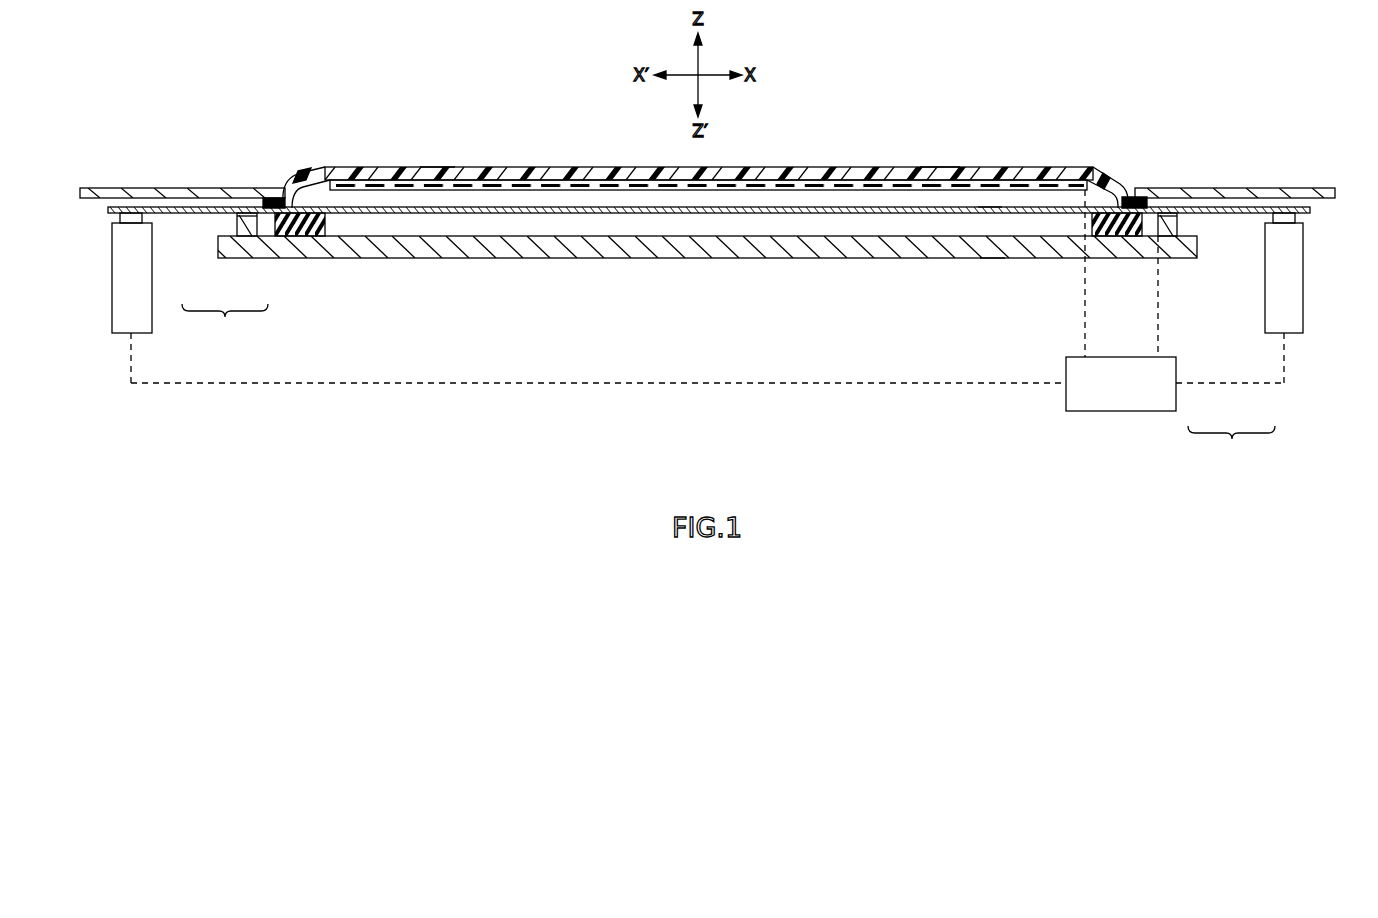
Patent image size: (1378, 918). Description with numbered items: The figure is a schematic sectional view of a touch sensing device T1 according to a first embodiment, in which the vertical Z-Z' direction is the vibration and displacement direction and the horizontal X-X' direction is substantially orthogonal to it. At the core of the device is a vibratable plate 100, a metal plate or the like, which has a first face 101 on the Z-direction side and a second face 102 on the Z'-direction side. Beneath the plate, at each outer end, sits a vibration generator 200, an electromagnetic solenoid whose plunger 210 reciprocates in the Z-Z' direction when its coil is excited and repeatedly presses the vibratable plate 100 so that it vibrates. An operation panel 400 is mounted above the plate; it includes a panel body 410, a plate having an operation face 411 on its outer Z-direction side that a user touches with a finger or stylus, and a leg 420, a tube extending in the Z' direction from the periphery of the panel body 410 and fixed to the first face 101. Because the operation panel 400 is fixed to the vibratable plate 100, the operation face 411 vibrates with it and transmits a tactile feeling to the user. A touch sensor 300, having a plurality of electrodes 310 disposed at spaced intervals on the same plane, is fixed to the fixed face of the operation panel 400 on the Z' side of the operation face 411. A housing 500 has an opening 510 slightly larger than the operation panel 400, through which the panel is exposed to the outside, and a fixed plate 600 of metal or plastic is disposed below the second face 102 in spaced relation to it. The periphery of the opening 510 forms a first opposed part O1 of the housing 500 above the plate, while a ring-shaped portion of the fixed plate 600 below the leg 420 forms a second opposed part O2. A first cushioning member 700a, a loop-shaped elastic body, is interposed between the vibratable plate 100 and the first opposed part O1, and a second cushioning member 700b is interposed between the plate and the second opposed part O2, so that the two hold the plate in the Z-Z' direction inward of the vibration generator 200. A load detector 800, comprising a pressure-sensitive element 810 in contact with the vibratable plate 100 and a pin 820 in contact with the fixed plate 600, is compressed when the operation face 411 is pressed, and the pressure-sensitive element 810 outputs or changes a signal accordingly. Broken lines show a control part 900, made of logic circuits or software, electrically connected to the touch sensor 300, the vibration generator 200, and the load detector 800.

The touch sensing device T1 is at (98, 75).
The vibratable plate 100 is at (1312, 210).
The first face 101 is at (990, 214).
The second face 102 is at (993, 259).
The vibration generator 200 is at (112, 291).
The plunger 210 is at (130, 213).
The touch sensor 300 is at (538, 187).
The electrodes 310 is at (345, 182).
The operation panel 400 is at (630, 168).
The panel body 410 is at (937, 168).
The operation face 411 is at (436, 168).
The leg 420 is at (1126, 198).
The housing 500 is at (219, 187).
The opening 510 is at (293, 200).
The fixed plate 600 is at (699, 259).
The first cushioning member 700a is at (1140, 199).
The second cushioning member 700b is at (1113, 238).
The load detector 800 is at (728, 383).
The pressure-sensitive element 810 is at (235, 215).
The pin 820 is at (245, 237).
The control part 900 is at (707, 300).
The first opposed part O1 is at (268, 192).
The second opposed part O2 is at (305, 239).